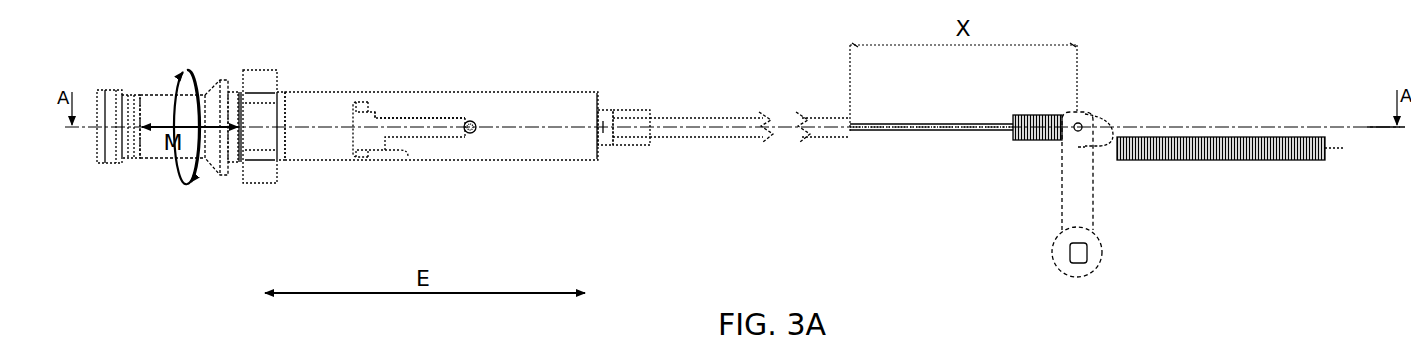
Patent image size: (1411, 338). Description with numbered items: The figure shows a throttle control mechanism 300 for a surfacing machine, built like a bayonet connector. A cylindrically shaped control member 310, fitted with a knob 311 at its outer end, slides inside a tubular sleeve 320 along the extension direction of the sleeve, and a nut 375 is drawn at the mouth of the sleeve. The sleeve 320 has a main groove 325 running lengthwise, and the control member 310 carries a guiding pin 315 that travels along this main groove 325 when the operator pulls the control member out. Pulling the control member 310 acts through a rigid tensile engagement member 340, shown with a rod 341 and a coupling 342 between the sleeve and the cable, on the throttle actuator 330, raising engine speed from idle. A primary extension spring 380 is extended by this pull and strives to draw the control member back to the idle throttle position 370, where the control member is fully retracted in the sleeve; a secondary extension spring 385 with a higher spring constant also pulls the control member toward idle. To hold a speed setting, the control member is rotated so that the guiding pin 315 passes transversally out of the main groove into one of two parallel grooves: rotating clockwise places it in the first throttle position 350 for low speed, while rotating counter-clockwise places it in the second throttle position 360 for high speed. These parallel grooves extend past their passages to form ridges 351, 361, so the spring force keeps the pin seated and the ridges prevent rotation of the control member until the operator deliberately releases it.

The throttle control mechanism 300 is at (138, 53).
The knob 311 is at (105, 160).
The control member 310 is at (128, 165).
The lock nut 375 is at (255, 187).
The sleeve 320 is at (508, 158).
The second throttle position 360 is at (373, 102).
The ridge 361 is at (377, 112).
The ridge 351 is at (387, 140).
The first throttle position 350 is at (405, 153).
The main groove 325 is at (432, 119).
The idle throttle position 370 is at (475, 120).
The guiding pin 315 is at (465, 134).
The coupling 342 is at (617, 139).
The rod 341 is at (702, 139).
The tensile engagement member 340 is at (925, 129).
The secondary extension spring 385 is at (1040, 131).
The throttle actuator 330 is at (1106, 254).
The primary extension spring 380 is at (1255, 154).